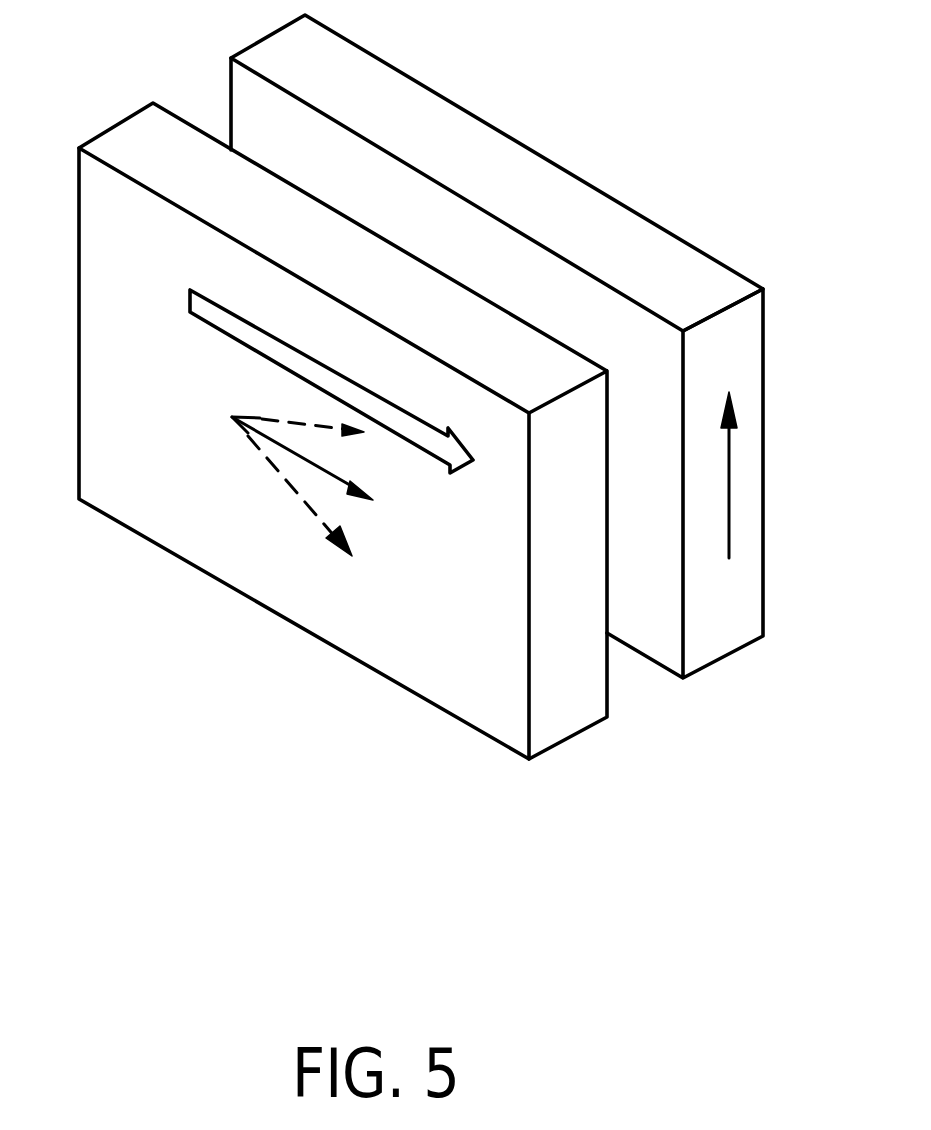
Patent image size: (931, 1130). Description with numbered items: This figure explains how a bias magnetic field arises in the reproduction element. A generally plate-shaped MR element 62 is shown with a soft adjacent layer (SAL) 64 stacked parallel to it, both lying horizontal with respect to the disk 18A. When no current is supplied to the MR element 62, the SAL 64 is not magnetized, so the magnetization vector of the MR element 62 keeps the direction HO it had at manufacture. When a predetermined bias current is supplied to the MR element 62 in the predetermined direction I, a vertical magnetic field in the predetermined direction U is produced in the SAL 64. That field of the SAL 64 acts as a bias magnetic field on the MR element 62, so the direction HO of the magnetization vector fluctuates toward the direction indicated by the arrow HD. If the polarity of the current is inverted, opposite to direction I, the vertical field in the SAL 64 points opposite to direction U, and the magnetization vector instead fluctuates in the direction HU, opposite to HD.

The MR element 62 is at (333, 405).
The soft adjacent layer (SAL) 64 is at (247, 45).
The disk 18A is at (258, 727).
The direction of bias current I is at (207, 292).
The direction of magnetization vector fluctuation (opposite HD) HU is at (258, 415).
The direction of magnetization vector fluctuation HD is at (280, 478).
The direction of magnetization vector at manufacture HO is at (343, 483).
The direction of vertical magnetic field U is at (730, 505).